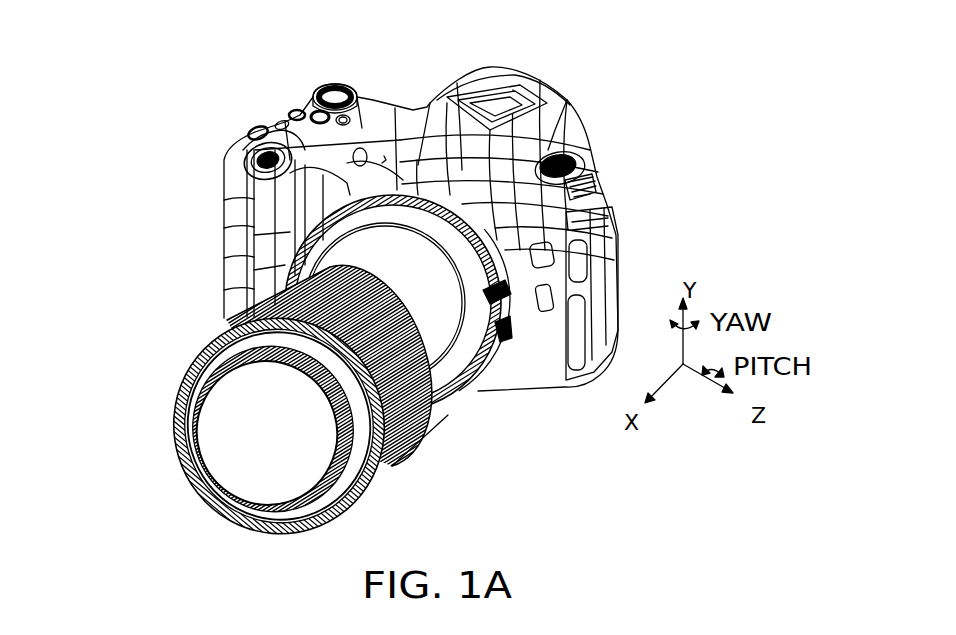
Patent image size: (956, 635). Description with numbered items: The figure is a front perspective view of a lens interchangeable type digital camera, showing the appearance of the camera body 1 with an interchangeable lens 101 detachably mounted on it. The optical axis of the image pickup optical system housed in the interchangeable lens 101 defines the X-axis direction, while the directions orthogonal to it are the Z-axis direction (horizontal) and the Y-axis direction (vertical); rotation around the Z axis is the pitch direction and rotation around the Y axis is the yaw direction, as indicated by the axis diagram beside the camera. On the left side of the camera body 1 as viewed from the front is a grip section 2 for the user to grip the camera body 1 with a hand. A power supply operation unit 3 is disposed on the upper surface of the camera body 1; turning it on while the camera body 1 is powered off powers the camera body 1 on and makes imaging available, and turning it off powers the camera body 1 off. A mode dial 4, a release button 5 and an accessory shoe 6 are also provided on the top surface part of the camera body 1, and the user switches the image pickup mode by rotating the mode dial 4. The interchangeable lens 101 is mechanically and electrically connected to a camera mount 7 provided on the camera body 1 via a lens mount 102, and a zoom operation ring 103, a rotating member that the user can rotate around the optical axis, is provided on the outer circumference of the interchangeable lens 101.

The camera body 1 is at (552, 72).
The grip section 2 is at (228, 253).
The power supply operation unit 3 is at (578, 157).
The mode dial 4 is at (337, 80).
The release button 5 is at (244, 145).
The accessory shoe 6 is at (467, 88).
The camera mount 7 is at (620, 247).
The interchangeable lens 101 is at (184, 490).
The lens mount 102 is at (560, 387).
The zoom operation ring 103 is at (396, 460).